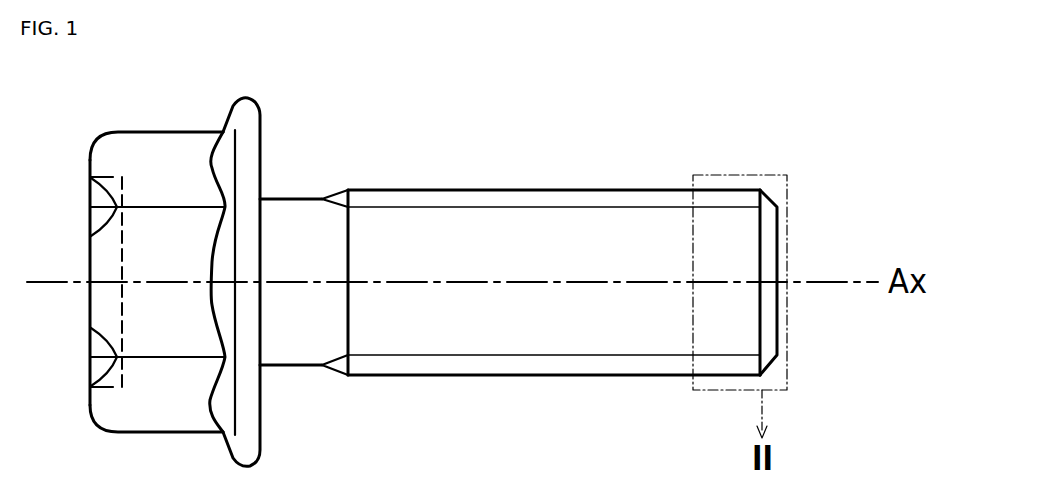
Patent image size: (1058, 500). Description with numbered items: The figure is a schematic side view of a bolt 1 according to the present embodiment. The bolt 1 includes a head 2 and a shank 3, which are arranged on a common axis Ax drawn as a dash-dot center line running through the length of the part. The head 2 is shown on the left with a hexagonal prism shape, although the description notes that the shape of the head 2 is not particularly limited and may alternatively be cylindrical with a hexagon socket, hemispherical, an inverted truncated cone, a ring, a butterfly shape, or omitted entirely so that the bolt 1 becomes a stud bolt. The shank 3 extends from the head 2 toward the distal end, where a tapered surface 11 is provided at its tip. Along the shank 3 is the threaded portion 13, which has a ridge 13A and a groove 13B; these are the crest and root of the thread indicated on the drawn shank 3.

The bolt 1 is at (492, 408).
The head 2 is at (157, 155).
The shank 3 is at (597, 218).
The tapered surface 11 is at (770, 222).
The threaded portion 13 is at (507, 112).
The ridge 13A is at (438, 190).
The groove 13B is at (523, 207).